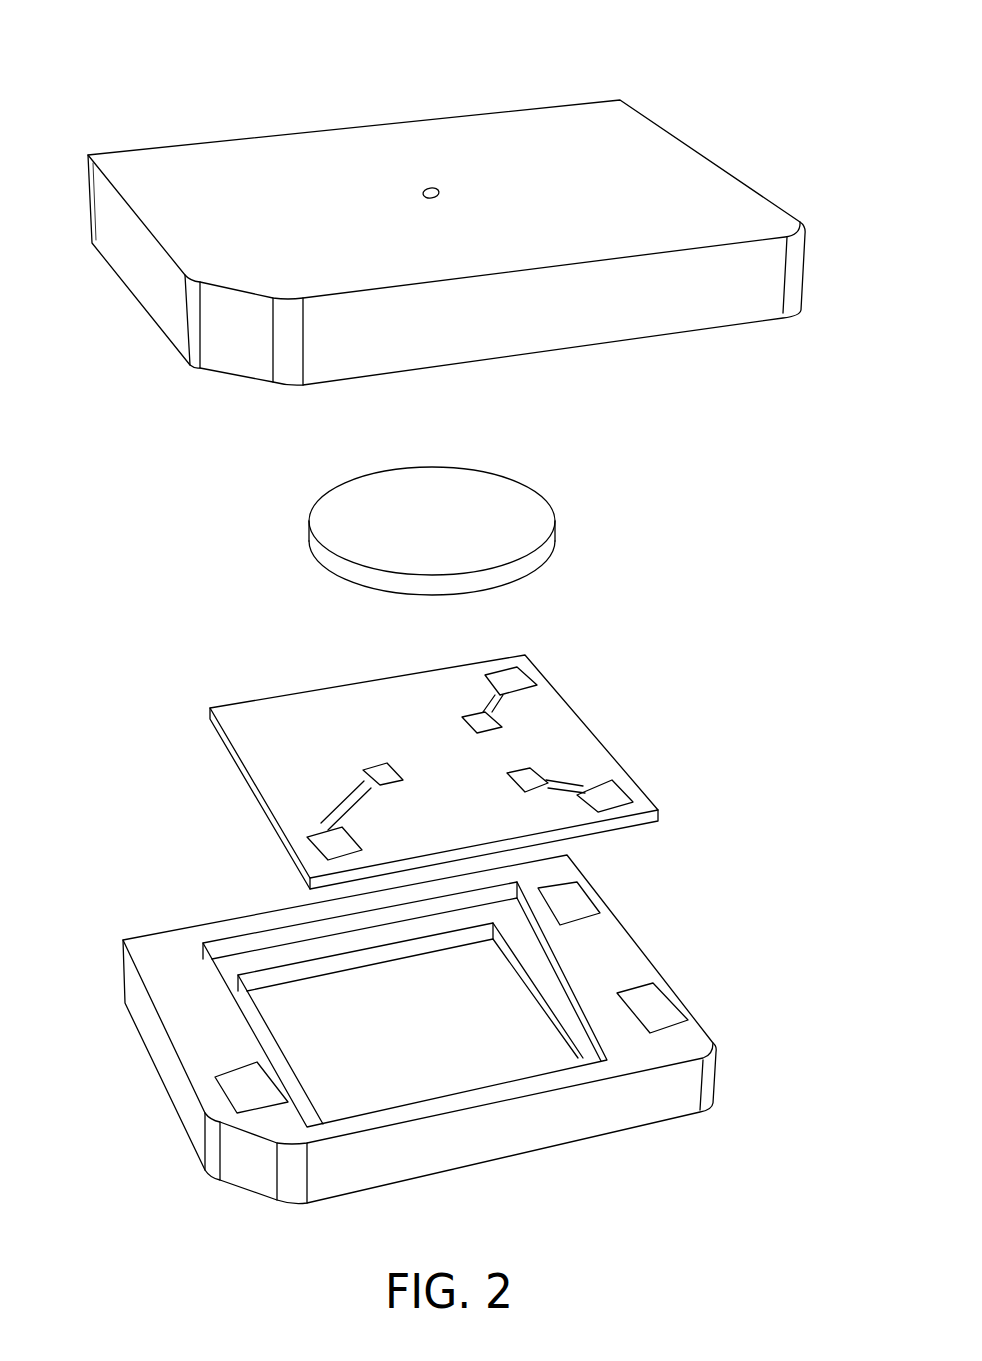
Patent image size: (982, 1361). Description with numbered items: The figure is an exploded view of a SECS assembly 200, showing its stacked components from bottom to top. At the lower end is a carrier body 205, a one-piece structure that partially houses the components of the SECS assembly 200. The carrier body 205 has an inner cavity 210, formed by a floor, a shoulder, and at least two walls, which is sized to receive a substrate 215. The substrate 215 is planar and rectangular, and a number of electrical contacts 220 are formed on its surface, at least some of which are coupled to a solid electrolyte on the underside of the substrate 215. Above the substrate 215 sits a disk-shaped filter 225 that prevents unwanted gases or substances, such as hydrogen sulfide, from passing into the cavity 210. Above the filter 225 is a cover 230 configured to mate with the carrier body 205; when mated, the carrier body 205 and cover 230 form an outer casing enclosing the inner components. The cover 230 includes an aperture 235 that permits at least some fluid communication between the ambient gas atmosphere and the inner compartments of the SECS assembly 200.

The SECS assembly 200 is at (128, 68).
The carrier body 205 is at (617, 920).
The inner cavity 210 is at (540, 1050).
The substrate 215 is at (577, 715).
The electrical contacts 220 is at (523, 672).
The filter 225 is at (545, 502).
The cover 230 is at (668, 133).
The aperture 235 is at (439, 191).